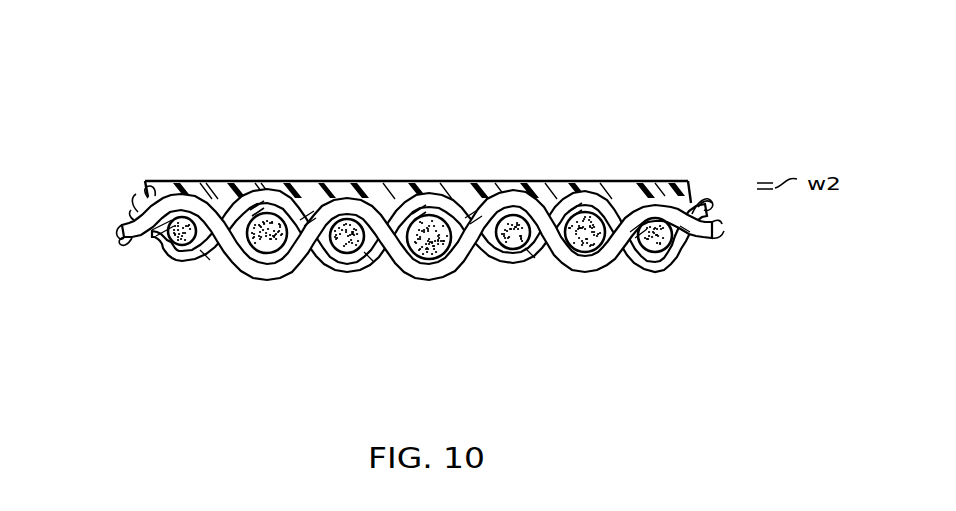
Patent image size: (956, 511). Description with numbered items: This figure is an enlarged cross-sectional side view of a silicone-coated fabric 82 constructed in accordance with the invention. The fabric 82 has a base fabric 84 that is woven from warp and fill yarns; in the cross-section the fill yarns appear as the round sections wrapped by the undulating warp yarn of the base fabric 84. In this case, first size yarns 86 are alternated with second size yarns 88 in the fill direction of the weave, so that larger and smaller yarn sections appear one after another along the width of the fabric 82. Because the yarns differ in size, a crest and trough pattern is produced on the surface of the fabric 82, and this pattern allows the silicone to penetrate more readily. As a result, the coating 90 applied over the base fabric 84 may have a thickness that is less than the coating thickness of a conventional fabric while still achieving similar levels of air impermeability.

The fabric 82 is at (679, 126).
The base fabric 84 is at (95, 229).
The first size yarns 86 is at (280, 255).
The second size yarns 88 is at (187, 250).
The coating 90 is at (374, 181).